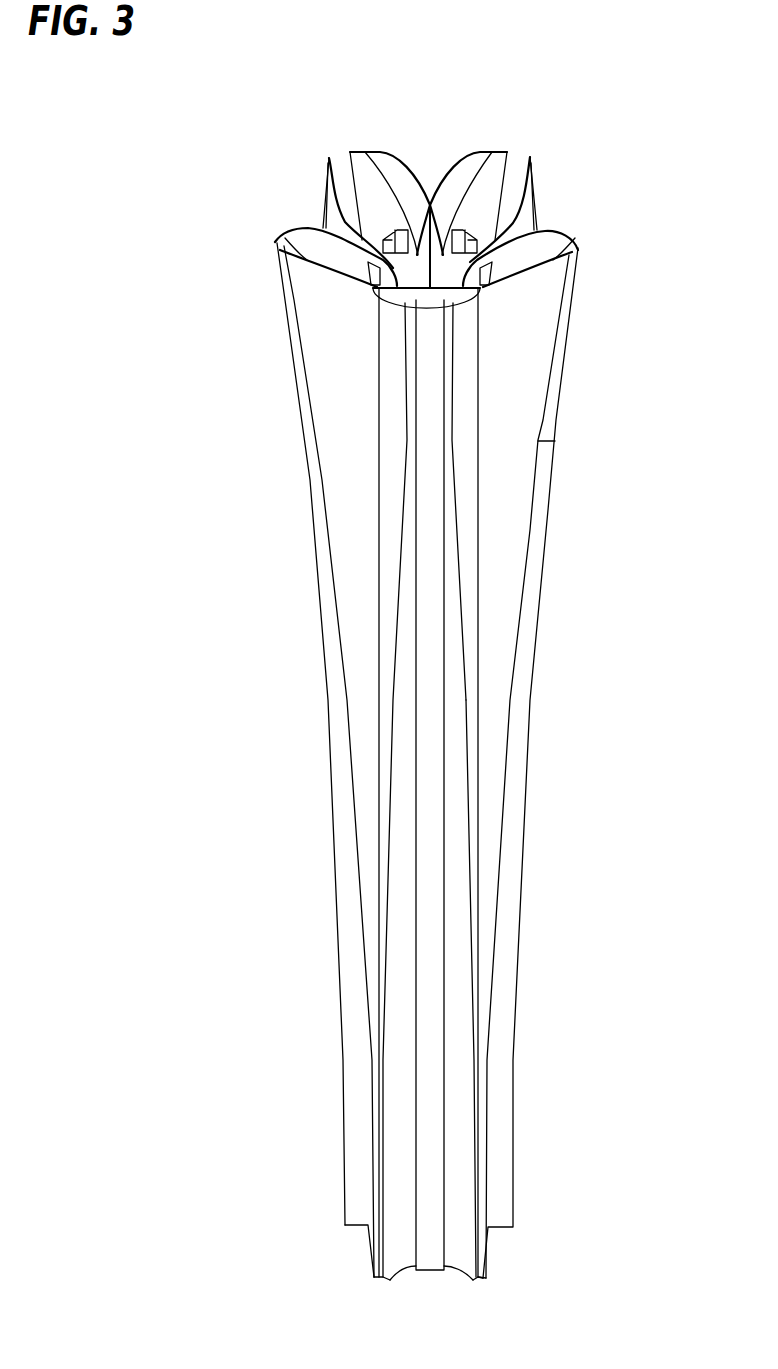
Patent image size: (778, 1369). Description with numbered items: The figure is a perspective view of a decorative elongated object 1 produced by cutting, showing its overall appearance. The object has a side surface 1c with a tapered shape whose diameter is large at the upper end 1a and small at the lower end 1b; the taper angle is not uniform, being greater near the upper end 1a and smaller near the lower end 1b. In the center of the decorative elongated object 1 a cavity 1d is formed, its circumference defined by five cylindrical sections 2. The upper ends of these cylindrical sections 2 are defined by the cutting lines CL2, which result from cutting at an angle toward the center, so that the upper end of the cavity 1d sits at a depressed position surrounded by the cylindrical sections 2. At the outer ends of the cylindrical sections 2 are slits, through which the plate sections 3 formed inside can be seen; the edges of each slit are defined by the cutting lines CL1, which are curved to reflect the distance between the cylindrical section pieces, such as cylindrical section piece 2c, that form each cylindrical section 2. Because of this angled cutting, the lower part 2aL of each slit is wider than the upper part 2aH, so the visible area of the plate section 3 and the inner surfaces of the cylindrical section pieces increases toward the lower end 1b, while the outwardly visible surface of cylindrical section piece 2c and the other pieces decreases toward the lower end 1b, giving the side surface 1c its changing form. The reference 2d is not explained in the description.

The decorative elongated object 1 is at (202, 266).
The upper end 1a is at (330, 172).
The lower end 1b is at (390, 1278).
The side surface 1c is at (333, 783).
The cavity 1d is at (362, 152).
The cylindrical section 2 is at (578, 292).
The cylindrical section piece 2c is at (551, 441).
The inner edge of inner member 2d is at (548, 483).
The upper part of the slit 2aH is at (448, 517).
The lower part of the slit 2aL is at (462, 953).
The plate section 3 is at (375, 278).
The cutting line CL1 is at (333, 570).
The cutting line CL2 is at (402, 153).